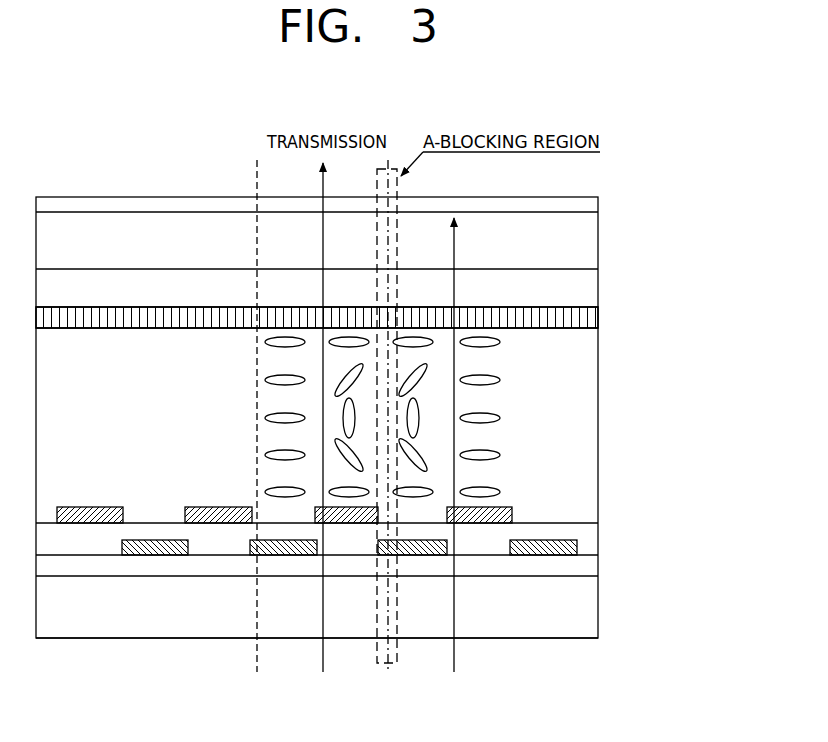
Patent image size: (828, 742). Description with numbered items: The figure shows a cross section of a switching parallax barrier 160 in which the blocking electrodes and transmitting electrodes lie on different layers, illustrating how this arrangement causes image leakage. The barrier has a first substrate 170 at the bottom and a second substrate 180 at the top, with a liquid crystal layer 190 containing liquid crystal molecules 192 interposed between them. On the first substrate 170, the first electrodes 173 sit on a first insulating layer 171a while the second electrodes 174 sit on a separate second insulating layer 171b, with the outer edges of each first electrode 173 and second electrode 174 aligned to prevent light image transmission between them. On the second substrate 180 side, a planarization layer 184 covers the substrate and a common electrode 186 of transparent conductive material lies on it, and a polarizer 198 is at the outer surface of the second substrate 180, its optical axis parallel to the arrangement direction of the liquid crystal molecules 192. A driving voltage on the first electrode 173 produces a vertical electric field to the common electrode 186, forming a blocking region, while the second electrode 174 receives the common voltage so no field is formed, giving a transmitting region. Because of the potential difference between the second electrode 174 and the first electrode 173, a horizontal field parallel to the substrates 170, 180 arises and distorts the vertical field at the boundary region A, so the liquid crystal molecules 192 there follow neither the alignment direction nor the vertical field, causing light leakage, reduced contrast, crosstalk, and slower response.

The switching parallax barrier 160 is at (625, 177).
The polarizer 198 is at (598, 205).
The second substrate 180 is at (598, 240).
The planarization layer 184 is at (598, 292).
The common electrode 186 is at (598, 320).
The liquid crystal layer 190 is at (598, 368).
The liquid crystal molecules 192 is at (500, 455).
The second electrode 174 is at (482, 523).
The second insulating layer 171b is at (598, 537).
The first electrode 173 is at (542, 555).
The first insulating layer 171a is at (598, 565).
The first substrate 170 is at (598, 607).